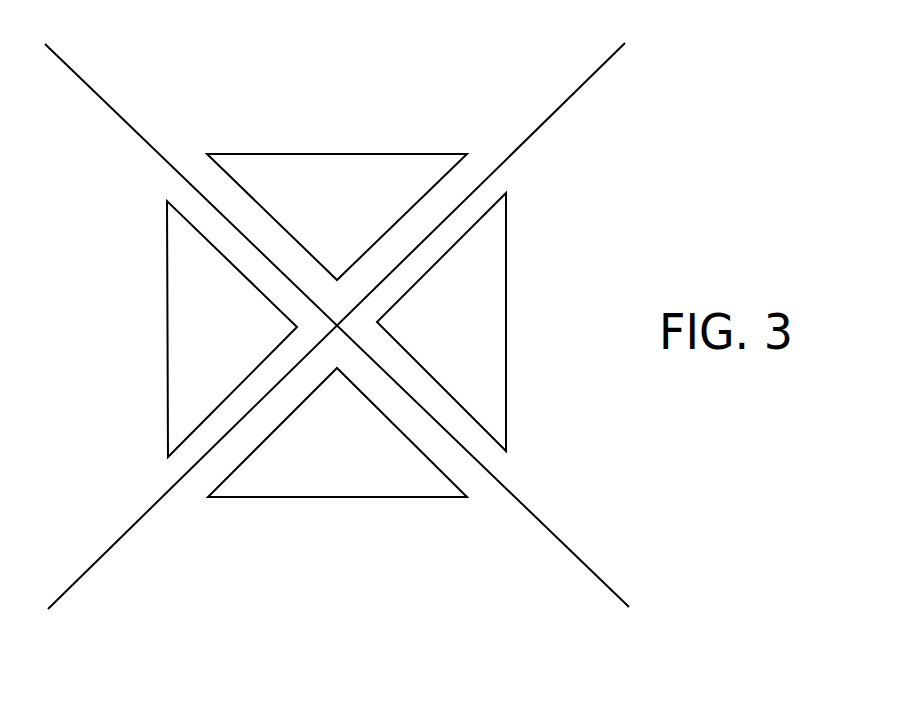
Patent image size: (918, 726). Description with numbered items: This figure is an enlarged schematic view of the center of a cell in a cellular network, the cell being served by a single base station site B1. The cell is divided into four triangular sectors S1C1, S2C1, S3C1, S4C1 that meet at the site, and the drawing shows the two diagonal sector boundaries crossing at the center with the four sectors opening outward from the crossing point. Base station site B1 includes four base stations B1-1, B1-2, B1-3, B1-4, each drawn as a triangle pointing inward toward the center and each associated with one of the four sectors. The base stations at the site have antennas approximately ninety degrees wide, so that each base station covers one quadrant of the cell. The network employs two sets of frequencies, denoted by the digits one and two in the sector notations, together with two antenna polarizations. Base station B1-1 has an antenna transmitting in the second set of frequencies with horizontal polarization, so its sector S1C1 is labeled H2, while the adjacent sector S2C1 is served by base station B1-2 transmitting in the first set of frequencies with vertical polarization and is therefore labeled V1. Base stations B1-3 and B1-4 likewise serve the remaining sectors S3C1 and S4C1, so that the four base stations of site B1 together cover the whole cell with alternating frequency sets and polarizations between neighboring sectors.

The base station site B1 is at (628, 165).
The base station B1-1 is at (473, 310).
The base station B1-2 is at (307, 182).
The base station B1-3 is at (175, 291).
The base station B1-4 is at (345, 475).
The sector S1C1 is at (484, 324).
The sector S2C1 is at (337, 172).
The sector S3C1 is at (173, 329).
The sector S4C1 is at (337, 467).